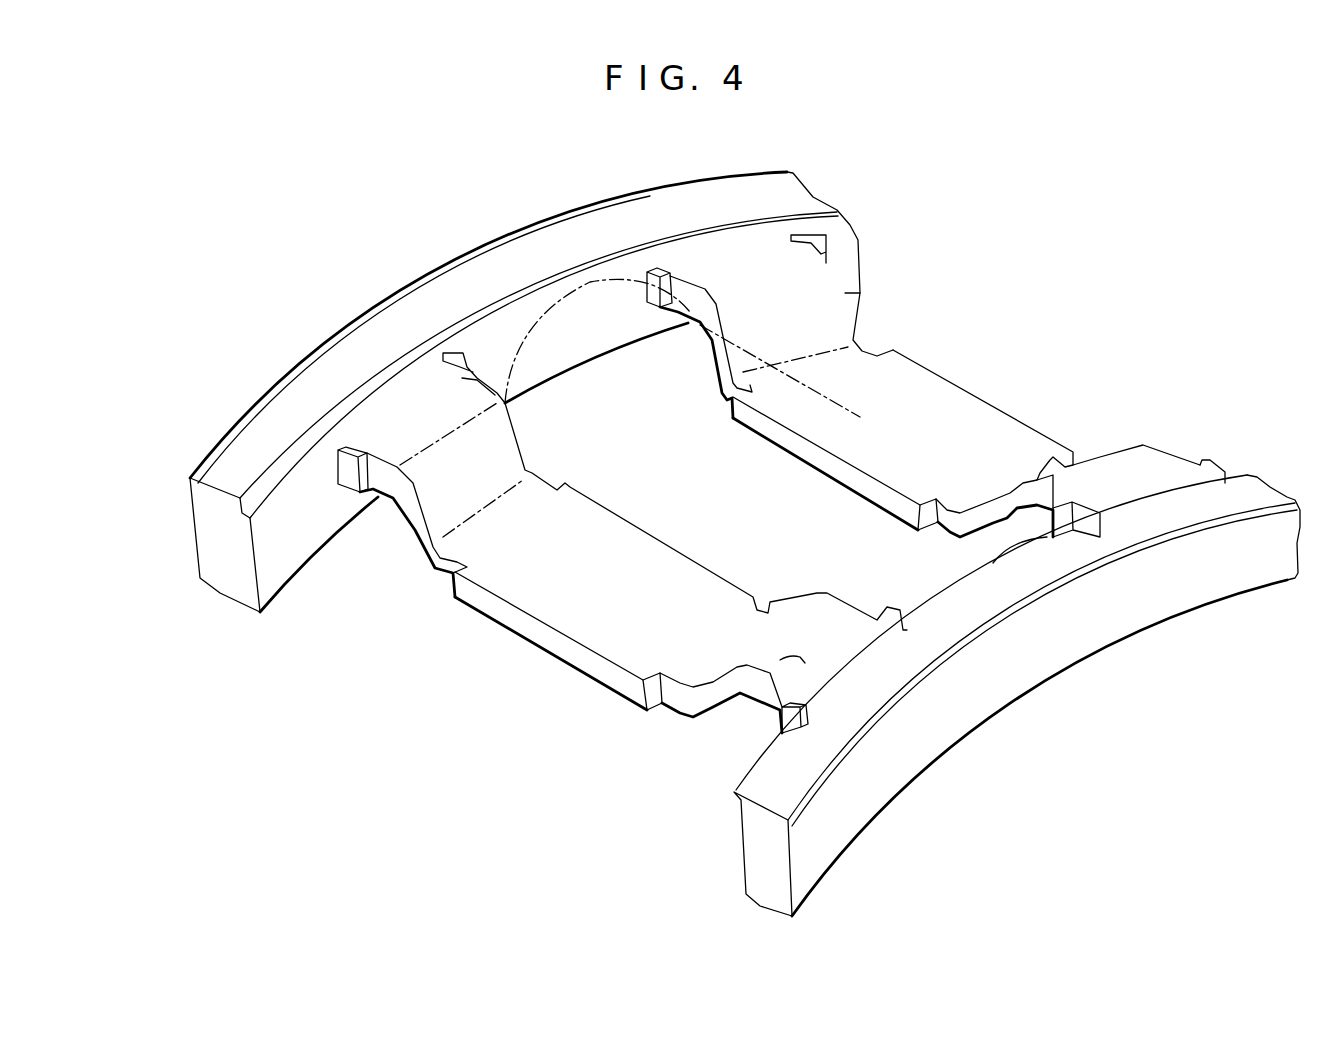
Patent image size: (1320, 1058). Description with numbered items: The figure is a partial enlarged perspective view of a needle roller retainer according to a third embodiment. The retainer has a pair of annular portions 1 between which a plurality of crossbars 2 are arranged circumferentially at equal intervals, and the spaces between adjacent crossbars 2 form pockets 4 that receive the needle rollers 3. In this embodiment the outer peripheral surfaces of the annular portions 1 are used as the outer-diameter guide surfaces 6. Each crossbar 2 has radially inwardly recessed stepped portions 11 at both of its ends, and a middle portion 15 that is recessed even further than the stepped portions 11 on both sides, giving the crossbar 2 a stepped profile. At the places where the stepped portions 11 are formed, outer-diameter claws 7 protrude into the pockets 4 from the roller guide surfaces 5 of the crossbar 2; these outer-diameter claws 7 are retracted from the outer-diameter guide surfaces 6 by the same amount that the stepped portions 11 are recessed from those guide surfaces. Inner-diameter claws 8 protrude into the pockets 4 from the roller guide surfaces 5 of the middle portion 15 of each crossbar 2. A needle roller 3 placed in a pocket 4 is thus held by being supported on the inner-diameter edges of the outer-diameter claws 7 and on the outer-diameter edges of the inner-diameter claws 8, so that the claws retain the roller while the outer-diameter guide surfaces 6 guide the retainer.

The annular portions 1 is at (460, 255).
The crossbars 2 is at (862, 500).
The needle rollers 3 is at (597, 297).
The pockets 4 is at (505, 345).
The roller guide surfaces 5 is at (714, 356).
The outer-diameter guide surfaces 6 is at (393, 330).
The outer-diameter claws 7 is at (322, 422).
The inner-diameter claws 8 is at (790, 428).
The stepped portions 11 is at (390, 428).
The middle portion 15 is at (625, 558).